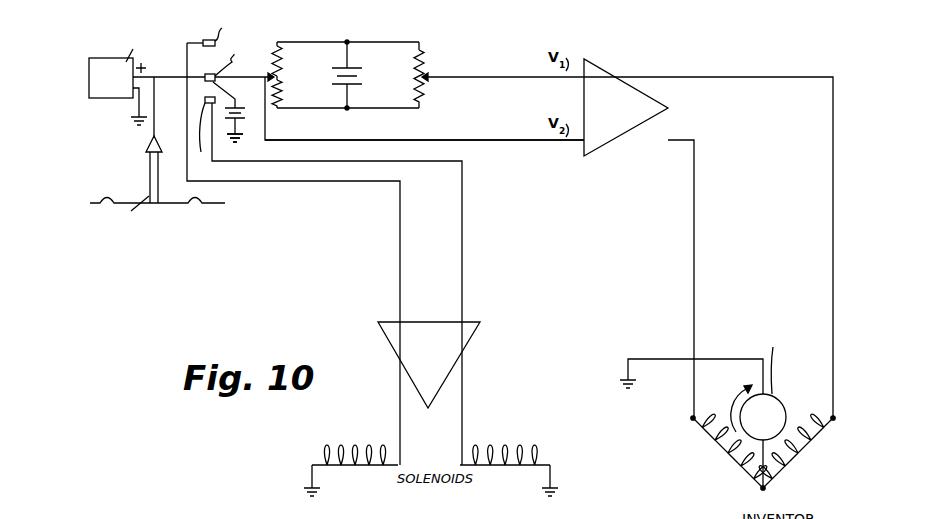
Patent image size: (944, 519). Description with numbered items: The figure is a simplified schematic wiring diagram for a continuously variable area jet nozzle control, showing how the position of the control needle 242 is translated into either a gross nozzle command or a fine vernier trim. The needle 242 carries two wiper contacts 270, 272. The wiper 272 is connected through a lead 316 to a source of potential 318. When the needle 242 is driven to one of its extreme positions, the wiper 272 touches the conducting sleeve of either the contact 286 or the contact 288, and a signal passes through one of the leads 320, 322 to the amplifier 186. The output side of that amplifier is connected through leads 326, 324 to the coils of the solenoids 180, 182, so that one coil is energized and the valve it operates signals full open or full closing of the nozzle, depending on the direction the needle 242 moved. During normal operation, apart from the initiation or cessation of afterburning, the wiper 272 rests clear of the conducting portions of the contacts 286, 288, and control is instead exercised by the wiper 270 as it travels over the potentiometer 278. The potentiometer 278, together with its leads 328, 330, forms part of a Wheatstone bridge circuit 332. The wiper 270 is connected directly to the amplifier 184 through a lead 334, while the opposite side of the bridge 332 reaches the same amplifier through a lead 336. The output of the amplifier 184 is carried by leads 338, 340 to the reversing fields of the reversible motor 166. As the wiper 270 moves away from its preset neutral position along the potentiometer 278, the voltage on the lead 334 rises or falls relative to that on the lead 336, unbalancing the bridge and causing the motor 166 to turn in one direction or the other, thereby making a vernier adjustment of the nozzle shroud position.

The reversible motor 166 is at (771, 402).
The solenoid 180 is at (358, 466).
The solenoid 182 is at (521, 446).
The amplifier 184 is at (656, 101).
The amplifier 186 is at (470, 338).
The needle 242 is at (150, 180).
The wiper contact 270 is at (232, 64).
The wiper contact 272 is at (239, 59).
The potentiometer 278 is at (284, 70).
The contact 286 is at (211, 26).
The contact 288 is at (208, 138).
The lead 316 is at (228, 94).
The source of potential 318 is at (244, 118).
The lead 320 is at (462, 248).
The lead 322 is at (400, 262).
The lead 324 is at (462, 393).
The lead 326 is at (398, 398).
The lead 328 is at (274, 46).
The lead 330 is at (283, 94).
The Wheatstone bridge circuit 332 is at (383, 40).
The lead 334 is at (459, 139).
The lead 336 is at (489, 75).
The lead 338 is at (756, 76).
The lead 340 is at (694, 182).